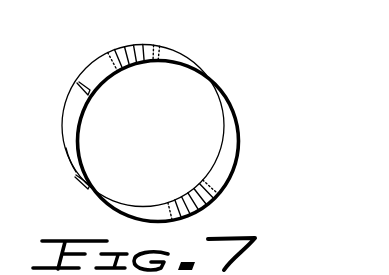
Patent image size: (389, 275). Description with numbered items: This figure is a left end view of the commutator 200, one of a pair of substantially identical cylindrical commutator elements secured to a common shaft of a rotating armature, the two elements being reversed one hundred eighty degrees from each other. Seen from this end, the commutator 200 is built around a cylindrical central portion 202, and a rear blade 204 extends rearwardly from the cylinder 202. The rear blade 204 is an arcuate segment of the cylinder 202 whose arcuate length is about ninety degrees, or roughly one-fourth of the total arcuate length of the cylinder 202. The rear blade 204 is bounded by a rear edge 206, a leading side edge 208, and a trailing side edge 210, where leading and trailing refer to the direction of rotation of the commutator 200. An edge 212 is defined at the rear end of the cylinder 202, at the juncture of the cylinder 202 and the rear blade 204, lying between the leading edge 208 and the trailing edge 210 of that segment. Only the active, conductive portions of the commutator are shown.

The commutator element 200 is at (149, 112).
The cylindrical central portion 202 is at (169, 47).
The rear blade 204 is at (63, 116).
The rear edge 206 is at (72, 164).
The leading side edge 208 is at (77, 87).
The trailing side edge 210 is at (78, 180).
The edge 212 is at (237, 126).